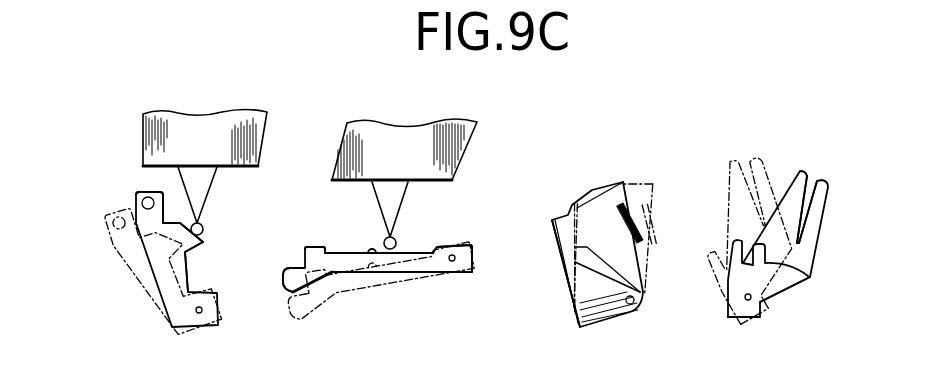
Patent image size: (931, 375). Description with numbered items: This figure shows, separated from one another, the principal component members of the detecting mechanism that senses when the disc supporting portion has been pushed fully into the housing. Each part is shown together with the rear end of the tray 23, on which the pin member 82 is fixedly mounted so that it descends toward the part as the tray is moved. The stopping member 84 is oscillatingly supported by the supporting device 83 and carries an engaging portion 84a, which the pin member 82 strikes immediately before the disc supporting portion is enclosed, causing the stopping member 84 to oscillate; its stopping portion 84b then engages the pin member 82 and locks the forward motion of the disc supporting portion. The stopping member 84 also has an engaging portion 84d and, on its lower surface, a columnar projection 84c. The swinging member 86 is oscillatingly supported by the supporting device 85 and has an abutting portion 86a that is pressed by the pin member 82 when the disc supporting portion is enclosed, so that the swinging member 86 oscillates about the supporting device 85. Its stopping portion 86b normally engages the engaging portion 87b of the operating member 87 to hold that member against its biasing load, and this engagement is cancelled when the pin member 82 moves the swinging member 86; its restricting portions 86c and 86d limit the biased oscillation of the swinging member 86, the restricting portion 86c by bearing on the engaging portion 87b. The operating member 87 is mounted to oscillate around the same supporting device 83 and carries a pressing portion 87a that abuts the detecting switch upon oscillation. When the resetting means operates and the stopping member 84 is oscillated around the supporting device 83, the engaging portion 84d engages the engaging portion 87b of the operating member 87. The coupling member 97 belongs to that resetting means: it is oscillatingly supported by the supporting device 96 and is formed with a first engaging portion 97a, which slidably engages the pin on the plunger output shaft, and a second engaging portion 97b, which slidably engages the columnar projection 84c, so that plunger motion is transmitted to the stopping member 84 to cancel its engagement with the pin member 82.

The tray 23 is at (262, 141).
The pin member 82 is at (203, 223).
The supporting device 83 is at (204, 310).
The stopping member 84 is at (133, 257).
The engaging portion 84a is at (205, 237).
The stopping portion 84b is at (196, 268).
The columnar projection 84c is at (152, 197).
The engaging portion 84d is at (137, 200).
The supporting device 85 is at (455, 261).
The swinging member 86 is at (412, 288).
The abutting portion 86a is at (368, 255).
The stopping portion 86b is at (322, 251).
The restricting portion 86c is at (294, 285).
The restricting portion 86d is at (428, 262).
The operating member 87 is at (632, 175).
The pressing portion 87a is at (639, 227).
The engaging portion 87b is at (553, 230).
The supporting device 96 is at (745, 298).
The coupling member 97 is at (801, 171).
The first engaging portion 97a is at (802, 280).
The second engaging portion 97b is at (801, 217).